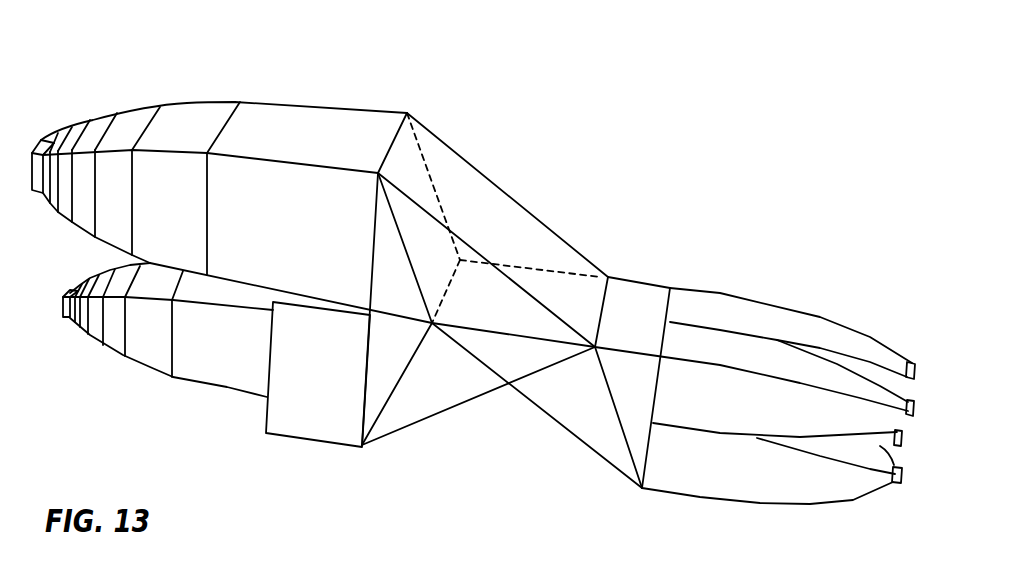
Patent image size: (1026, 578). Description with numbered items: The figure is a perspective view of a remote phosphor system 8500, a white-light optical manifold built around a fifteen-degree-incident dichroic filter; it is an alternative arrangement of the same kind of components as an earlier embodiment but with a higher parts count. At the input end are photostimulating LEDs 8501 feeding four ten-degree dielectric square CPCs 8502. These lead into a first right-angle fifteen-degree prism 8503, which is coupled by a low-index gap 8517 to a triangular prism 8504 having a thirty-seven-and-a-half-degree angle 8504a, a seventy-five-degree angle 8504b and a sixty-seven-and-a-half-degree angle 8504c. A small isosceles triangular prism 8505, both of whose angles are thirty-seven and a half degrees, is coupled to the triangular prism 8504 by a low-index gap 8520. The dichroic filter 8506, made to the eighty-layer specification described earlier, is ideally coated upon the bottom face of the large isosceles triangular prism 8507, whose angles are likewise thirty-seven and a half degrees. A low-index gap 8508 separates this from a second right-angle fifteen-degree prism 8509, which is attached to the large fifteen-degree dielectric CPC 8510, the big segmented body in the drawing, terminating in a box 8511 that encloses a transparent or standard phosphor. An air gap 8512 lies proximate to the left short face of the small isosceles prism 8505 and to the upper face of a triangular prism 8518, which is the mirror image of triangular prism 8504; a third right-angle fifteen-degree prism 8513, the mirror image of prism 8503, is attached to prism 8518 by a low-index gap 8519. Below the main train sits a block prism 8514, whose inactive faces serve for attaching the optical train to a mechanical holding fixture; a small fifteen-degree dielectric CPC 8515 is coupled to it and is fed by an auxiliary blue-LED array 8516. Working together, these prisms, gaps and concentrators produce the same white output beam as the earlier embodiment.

The remote phosphor system 8500 is at (622, 100).
The photostimulating LEDs 8501 is at (912, 360).
The dielectric square CPCs 8502 is at (772, 318).
The first right-angle 15° prism 8503 is at (645, 298).
The triangular prism 8504 is at (575, 405).
The 37.5° angle 8504a is at (622, 465).
The 75° angle 8504b is at (528, 388).
The 67.5° angle 8504c is at (587, 363).
The small isosceles triangular prism 8505 is at (512, 353).
The dichroic filter 8506 is at (540, 265).
The large isosceles triangular prism 8507 is at (495, 180).
The low-index gap 8508 is at (433, 168).
The second right-angle 15° prism 8509 is at (396, 277).
The large 15° dielectric CPC 8510 is at (182, 120).
The box 8511 is at (45, 135).
The air gap 8512 is at (463, 378).
The third right-angle 15° prism 8513 is at (382, 372).
The block prism 8514 is at (297, 390).
The small 15° dielectric CPC 8515 is at (147, 342).
The auxiliary blue-LED array 8516 is at (63, 320).
The low-index gap 8517 is at (622, 425).
The triangular prism 8518 is at (462, 353).
The low-index gap 8519 is at (405, 380).
The low-index gap 8520 is at (560, 360).